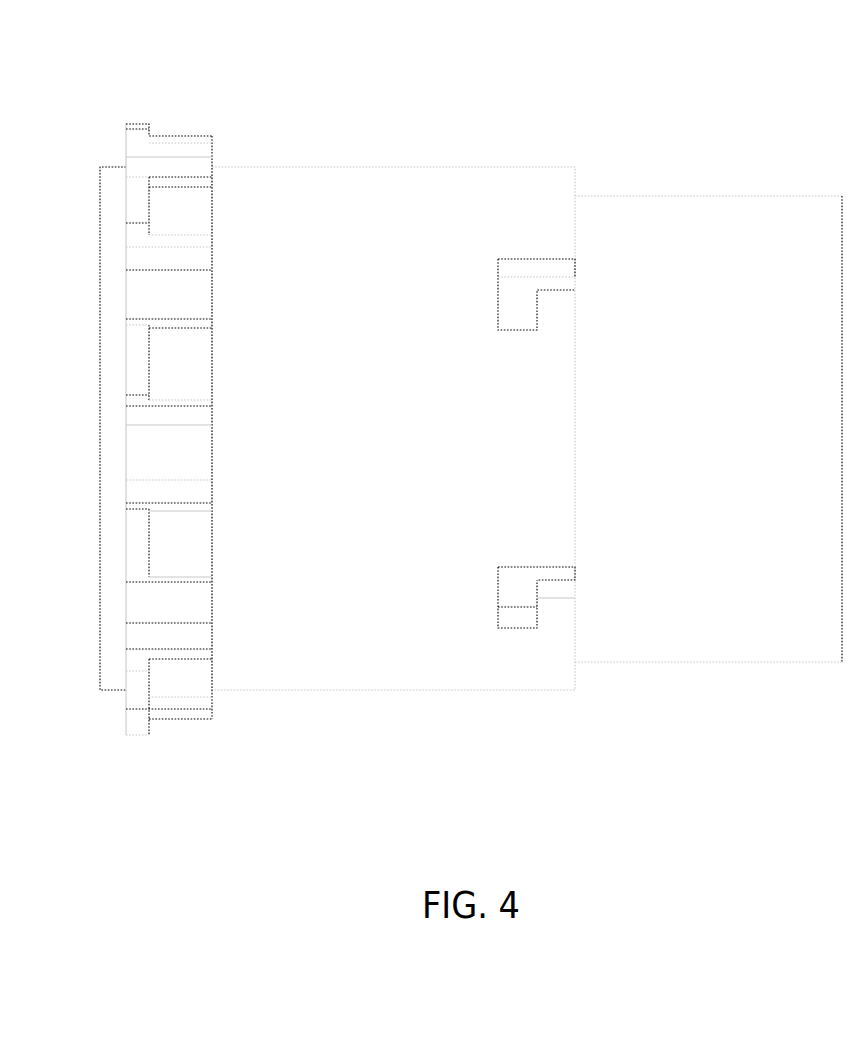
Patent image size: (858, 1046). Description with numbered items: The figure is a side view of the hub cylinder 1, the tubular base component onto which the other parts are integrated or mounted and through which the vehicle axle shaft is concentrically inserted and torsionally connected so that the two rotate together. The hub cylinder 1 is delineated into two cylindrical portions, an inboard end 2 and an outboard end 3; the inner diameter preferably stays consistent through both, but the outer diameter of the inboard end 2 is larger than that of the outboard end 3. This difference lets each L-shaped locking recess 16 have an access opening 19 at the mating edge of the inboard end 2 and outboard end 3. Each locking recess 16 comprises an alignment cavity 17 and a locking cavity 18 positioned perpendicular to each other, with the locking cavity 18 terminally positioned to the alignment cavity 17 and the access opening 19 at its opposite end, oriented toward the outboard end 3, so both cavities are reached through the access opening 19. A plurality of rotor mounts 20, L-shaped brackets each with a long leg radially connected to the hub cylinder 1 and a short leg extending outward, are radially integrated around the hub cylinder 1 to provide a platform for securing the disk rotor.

The hub cylinder 1 is at (574, 75).
The inboard end 2 is at (393, 709).
The outboard end 3 is at (733, 684).
The L-shaped locking recess 16 is at (464, 297).
The alignment cavity 17 is at (537, 256).
The locking cavity 18 is at (518, 336).
The access opening 19 is at (578, 283).
The rotor mount 20 is at (138, 125).